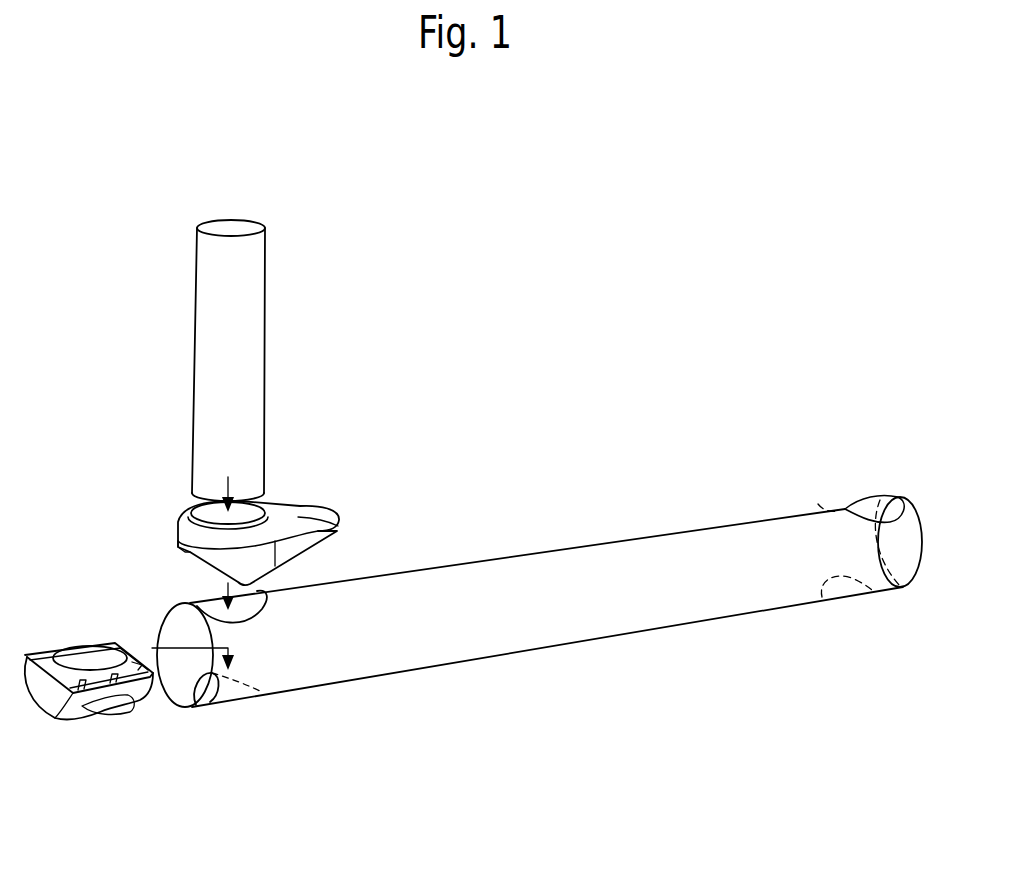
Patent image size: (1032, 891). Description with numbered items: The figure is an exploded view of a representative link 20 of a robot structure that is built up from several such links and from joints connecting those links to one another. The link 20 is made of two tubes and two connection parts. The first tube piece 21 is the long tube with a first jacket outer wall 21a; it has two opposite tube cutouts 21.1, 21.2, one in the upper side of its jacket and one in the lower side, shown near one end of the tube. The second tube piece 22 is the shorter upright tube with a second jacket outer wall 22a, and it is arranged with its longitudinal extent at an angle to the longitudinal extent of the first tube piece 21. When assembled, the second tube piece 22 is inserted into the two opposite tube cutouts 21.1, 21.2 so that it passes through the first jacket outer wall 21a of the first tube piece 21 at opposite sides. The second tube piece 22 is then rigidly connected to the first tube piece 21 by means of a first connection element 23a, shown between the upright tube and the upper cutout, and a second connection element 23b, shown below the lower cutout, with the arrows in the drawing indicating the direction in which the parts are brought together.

The link 20 is at (625, 325).
The first tube piece 21 is at (731, 506).
The first jacket outer wall 21a is at (583, 611).
The tube cutout 21.1 is at (212, 599).
The tube cutout 21.2 is at (240, 700).
The second tube piece 22 is at (280, 272).
The second jacket outer wall 22a is at (208, 303).
The first connection element 23a is at (338, 492).
The second connection element 23b is at (102, 733).